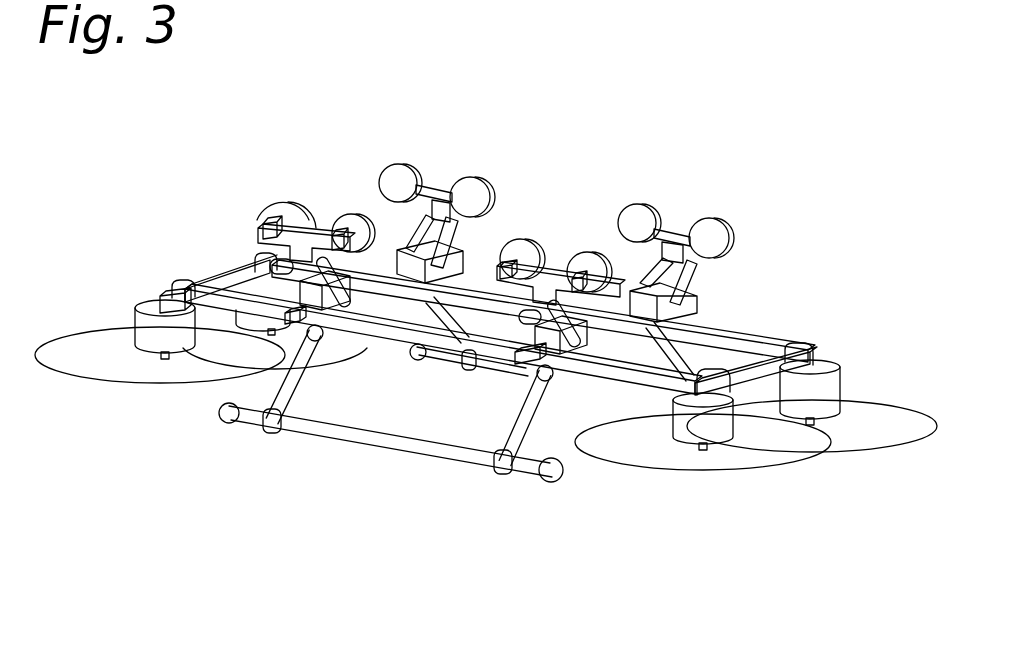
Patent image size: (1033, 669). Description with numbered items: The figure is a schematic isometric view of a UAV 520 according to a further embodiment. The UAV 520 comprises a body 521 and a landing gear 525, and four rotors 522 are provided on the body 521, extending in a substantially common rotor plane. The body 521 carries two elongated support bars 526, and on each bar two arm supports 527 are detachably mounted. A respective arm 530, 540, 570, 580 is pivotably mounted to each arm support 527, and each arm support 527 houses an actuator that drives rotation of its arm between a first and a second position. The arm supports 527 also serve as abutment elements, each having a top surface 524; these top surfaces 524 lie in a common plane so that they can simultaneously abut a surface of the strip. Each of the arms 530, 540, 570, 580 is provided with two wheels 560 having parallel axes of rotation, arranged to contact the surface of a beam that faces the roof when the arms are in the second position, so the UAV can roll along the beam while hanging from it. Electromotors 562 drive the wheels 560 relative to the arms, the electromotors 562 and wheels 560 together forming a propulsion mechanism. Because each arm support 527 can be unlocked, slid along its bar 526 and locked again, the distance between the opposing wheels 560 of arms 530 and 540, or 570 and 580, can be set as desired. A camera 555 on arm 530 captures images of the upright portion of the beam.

The UAV 520 is at (628, 526).
The body 521 is at (231, 298).
The rotors 522 is at (746, 467).
The top surface 524 is at (637, 313).
The landing gear 525 is at (407, 445).
The elongated support bars 526 is at (290, 316).
The arm supports 527 is at (320, 300).
The arm 530 is at (292, 236).
The arm 540 is at (433, 198).
The camera 555 is at (313, 227).
The wheels 560 is at (350, 225).
The electromotors 562 is at (518, 260).
The arm 570 is at (662, 237).
The arm 580 is at (672, 237).